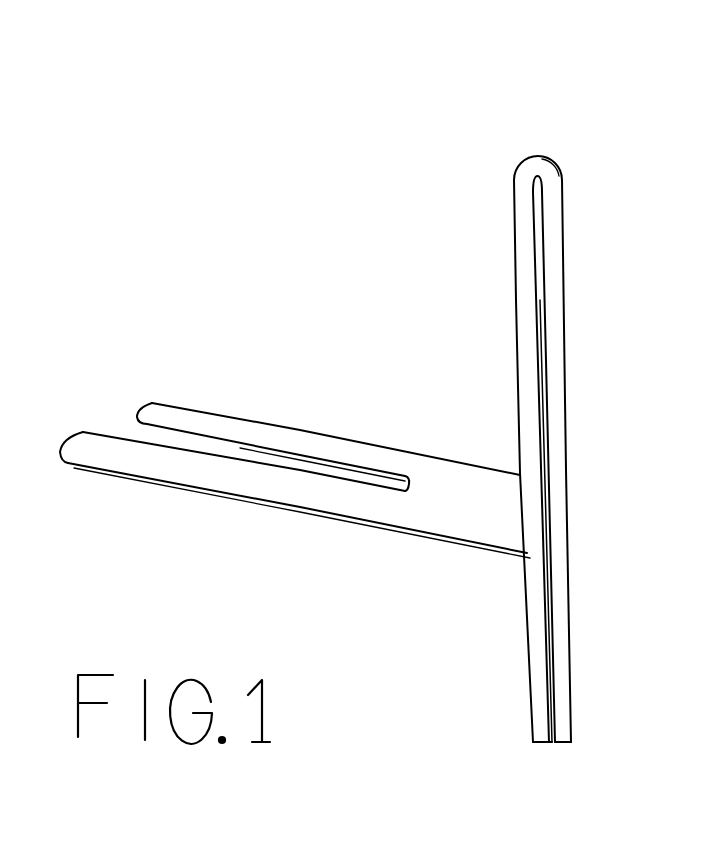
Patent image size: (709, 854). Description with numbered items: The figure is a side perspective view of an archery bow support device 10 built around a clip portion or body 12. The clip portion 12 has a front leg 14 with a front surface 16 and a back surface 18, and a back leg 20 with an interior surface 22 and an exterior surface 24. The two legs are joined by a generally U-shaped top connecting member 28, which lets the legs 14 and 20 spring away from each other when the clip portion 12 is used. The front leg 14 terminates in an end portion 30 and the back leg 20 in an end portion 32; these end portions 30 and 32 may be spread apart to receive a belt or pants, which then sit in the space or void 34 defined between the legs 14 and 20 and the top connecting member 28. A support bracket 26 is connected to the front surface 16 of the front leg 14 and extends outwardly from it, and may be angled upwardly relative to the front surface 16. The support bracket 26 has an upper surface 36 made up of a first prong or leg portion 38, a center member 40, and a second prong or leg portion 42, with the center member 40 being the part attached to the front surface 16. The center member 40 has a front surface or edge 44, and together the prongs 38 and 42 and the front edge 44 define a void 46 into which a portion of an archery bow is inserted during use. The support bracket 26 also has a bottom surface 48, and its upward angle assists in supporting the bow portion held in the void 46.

The archery bow support device 10 is at (282, 104).
The clip portion 12 is at (630, 190).
The front leg 14 is at (478, 307).
The front surface 16 is at (518, 373).
The back surface 18 is at (552, 745).
The back leg 20 is at (615, 470).
The interior surface 22 is at (540, 260).
The exterior surface 24 is at (564, 308).
The support bracket 26 is at (262, 343).
The top connecting member 28 is at (531, 130).
The end portion 30 is at (535, 744).
The end portion 32 is at (571, 745).
The space 34 is at (543, 427).
The upper surface 36 is at (431, 478).
The first prong 38 is at (198, 417).
The center member 40 is at (477, 513).
The second prong 42 is at (175, 462).
The front surface 44 is at (403, 478).
The void 46 is at (260, 458).
The bottom surface 48 is at (368, 530).